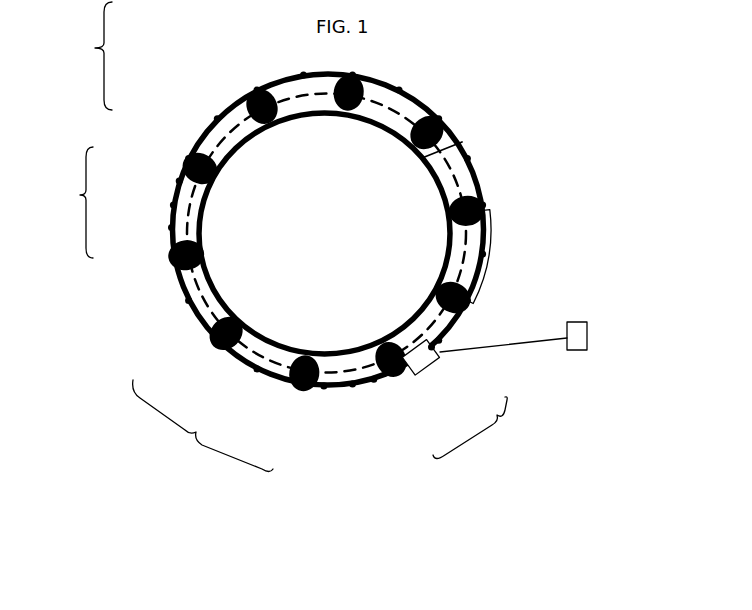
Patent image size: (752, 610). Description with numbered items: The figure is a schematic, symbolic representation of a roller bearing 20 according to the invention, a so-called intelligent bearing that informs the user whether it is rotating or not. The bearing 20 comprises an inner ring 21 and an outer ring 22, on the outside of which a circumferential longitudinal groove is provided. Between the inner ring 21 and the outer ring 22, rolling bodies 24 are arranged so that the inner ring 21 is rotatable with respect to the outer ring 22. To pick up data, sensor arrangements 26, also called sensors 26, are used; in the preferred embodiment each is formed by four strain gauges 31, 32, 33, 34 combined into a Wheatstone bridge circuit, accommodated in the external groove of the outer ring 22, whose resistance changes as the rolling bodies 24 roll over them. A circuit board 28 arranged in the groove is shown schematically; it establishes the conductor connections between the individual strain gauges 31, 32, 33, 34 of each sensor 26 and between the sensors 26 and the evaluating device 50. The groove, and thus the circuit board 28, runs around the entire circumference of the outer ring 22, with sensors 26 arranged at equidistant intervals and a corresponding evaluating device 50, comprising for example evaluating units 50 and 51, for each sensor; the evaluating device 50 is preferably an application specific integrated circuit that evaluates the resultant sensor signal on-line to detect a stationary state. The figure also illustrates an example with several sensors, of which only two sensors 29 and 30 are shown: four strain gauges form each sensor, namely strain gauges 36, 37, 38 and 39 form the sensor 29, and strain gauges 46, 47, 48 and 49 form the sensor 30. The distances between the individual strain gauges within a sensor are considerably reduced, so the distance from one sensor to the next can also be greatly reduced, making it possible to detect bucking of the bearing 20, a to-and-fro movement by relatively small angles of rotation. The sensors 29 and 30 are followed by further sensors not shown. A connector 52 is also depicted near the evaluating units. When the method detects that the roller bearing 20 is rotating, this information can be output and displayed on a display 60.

The roller bearing 20 is at (430, 98).
The inner ring 21 is at (461, 142).
The outer ring 22 is at (447, 127).
The rolling bodies 24 is at (376, 392).
The sensor arrangement 26 is at (203, 430).
The circuit board 28 is at (492, 224).
The sensor 29 is at (73, 202).
The sensor 30 is at (92, 56).
The strain gauge 31 is at (186, 303).
The strain gauge 32 is at (212, 343).
The strain gauge 33 is at (254, 372).
The strain gauge 34 is at (297, 390).
The strain gauge 36 is at (176, 180).
The strain gauge 37 is at (171, 205).
The strain gauge 38 is at (168, 229).
The strain gauge 39 is at (170, 256).
The strain gauge 46 is at (228, 103).
The strain gauge 47 is at (212, 116).
The strain gauge 48 is at (200, 128).
The strain gauge 49 is at (186, 155).
The evaluating device 50 is at (476, 428).
The evaluating unit 51 is at (438, 356).
The connector housing 52 is at (418, 382).
The display 60 is at (587, 337).